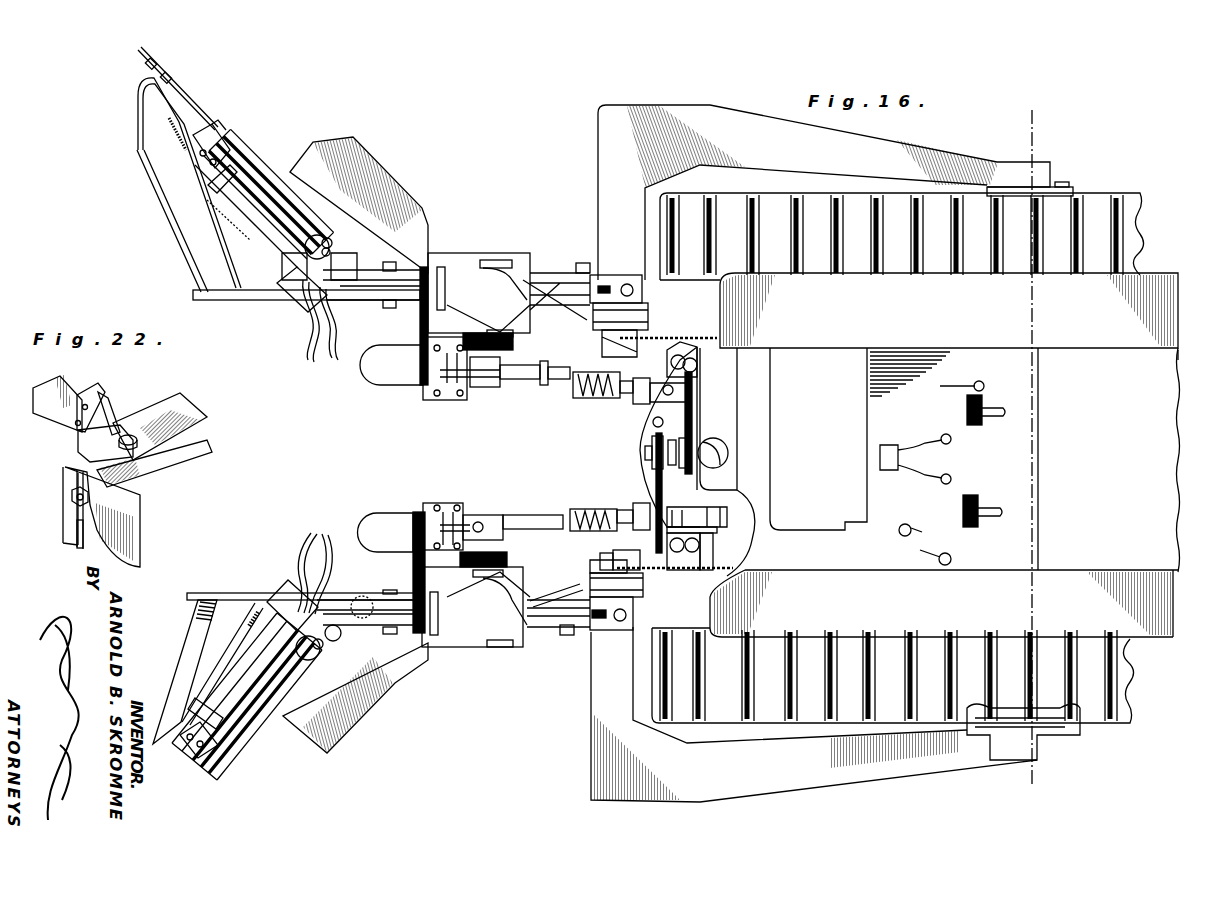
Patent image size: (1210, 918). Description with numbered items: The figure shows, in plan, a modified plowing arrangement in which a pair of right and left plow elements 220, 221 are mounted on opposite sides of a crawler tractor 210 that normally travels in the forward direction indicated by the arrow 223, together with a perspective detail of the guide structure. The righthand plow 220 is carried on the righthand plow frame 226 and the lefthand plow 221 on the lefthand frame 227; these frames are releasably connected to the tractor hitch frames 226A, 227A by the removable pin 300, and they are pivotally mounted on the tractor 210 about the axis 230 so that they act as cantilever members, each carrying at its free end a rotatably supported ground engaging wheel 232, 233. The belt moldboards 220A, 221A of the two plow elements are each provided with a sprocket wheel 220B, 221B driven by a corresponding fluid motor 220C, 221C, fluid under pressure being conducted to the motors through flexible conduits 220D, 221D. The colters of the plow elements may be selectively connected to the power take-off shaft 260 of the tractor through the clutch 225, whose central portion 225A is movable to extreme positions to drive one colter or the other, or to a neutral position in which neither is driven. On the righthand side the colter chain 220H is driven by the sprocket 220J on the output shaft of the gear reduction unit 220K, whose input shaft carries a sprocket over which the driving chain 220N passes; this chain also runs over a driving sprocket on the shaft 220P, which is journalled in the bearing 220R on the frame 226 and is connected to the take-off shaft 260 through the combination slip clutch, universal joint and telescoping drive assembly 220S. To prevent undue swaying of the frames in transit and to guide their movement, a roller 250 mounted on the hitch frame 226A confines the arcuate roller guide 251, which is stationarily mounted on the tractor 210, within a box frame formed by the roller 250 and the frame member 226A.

In FIG. 16, the tractor 210 is at (916, 471).
In FIG. 16, the righthand plow element 220 is at (152, 652).
In FIG. 16, the belt moldboard 220A is at (247, 731).
In FIG. 16, the sprocket wheel 220B is at (365, 683).
In FIG. 16, the fluid motor 220C is at (283, 596).
In FIG. 16, the flexible conduits 220D is at (317, 565).
In FIG. 16, the chain 220H is at (488, 532).
In FIG. 16, the sprocket 220J is at (505, 563).
In FIG. 16, the gear reduction unit 220K is at (470, 630).
In FIG. 16, the driving chain 220N is at (413, 568).
In FIG. 16, the shaft 220P is at (445, 517).
In FIG. 16, the bearing 220R is at (456, 518).
In FIG. 16, the combination slip clutch universal joint and telescoping drive assembly 220S is at (566, 496).
In FIG. 16, the lefthand plow element 221 is at (300, 158).
In FIG. 16, the belt moldboard 221A is at (250, 151).
In FIG. 16, the sprocket wheel 221B is at (360, 203).
In FIG. 16, the fluid motor 221C is at (293, 293).
In FIG. 16, the flexible conduits 221D is at (316, 352).
In FIG. 16, the arrow 223 is at (1192, 397).
In FIG. 16, the clutch 225 is at (657, 473).
In FIG. 16, the central portion of clutch 225A is at (650, 432).
In FIG. 16, the righthand plow frame 226 is at (557, 627).
In FIG. 22, the righthand plow frame 226 is at (62, 378).
In FIG. 16, the tractor hitch frame 226A is at (600, 714).
In FIG. 22, the tractor hitch frame 226A is at (68, 513).
In FIG. 16, the lefthand plow frame 227 is at (553, 277).
In FIG. 16, the tractor hitch frame 227A is at (600, 176).
In FIG. 16, the axis 230 is at (1034, 388).
In FIG. 16, the ground engaging wheel 232 is at (394, 514).
In FIG. 16, the ground engaging wheel 233 is at (391, 385).
In FIG. 16, the roller 250 is at (643, 560).
In FIG. 22, the roller 250 is at (97, 503).
In FIG. 16, the arcuate roller guide 251 is at (595, 577).
In FIG. 22, the arcuate roller guide 251 is at (78, 543).
In FIG. 16, the power take-off shaft 260 is at (705, 453).
In FIG. 22, the removable pin 300 is at (127, 436).